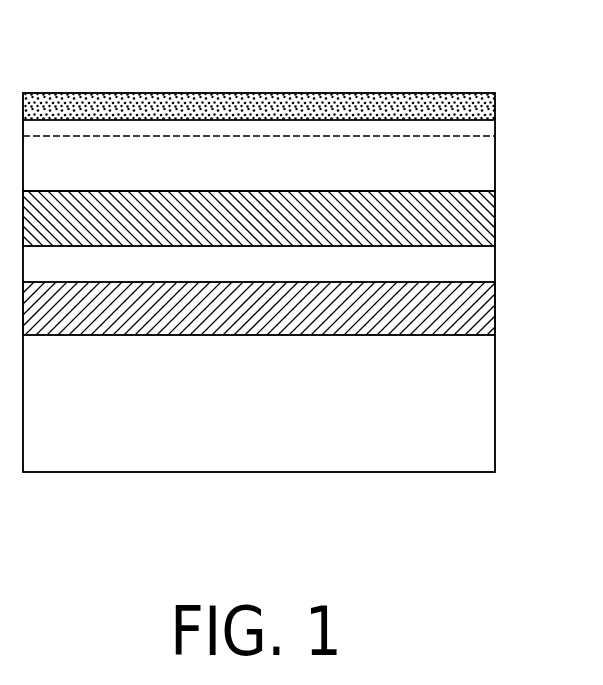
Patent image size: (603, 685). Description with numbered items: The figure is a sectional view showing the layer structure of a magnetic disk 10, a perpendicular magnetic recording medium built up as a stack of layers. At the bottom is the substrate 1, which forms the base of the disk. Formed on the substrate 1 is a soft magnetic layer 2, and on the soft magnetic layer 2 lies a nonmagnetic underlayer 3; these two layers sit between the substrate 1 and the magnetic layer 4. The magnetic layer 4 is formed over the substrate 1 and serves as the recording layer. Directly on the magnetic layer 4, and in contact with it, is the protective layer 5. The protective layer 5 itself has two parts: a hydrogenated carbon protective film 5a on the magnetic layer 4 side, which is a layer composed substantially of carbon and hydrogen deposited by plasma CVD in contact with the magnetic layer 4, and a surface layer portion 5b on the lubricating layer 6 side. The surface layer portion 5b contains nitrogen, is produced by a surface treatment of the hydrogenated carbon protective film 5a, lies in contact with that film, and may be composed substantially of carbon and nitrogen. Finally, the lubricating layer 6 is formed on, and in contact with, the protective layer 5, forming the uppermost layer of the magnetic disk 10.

The magnetic disk 10 is at (557, 36).
The substrate 1 is at (496, 426).
The soft magnetic layer 2 is at (496, 312).
The nonmagnetic underlayer 3 is at (494, 262).
The magnetic layer 4 is at (495, 224).
The protective layer 5 is at (557, 120).
The hydrogenated carbon protective film 5a is at (490, 167).
The surface layer portion 5b is at (491, 129).
The lubricating layer 6 is at (493, 104).